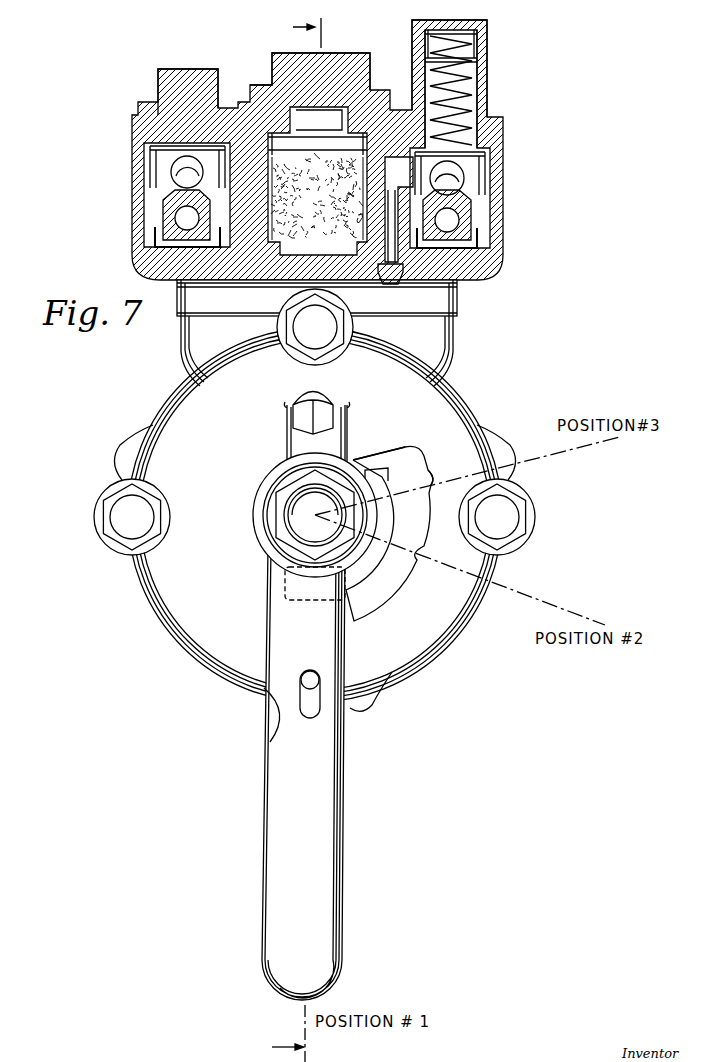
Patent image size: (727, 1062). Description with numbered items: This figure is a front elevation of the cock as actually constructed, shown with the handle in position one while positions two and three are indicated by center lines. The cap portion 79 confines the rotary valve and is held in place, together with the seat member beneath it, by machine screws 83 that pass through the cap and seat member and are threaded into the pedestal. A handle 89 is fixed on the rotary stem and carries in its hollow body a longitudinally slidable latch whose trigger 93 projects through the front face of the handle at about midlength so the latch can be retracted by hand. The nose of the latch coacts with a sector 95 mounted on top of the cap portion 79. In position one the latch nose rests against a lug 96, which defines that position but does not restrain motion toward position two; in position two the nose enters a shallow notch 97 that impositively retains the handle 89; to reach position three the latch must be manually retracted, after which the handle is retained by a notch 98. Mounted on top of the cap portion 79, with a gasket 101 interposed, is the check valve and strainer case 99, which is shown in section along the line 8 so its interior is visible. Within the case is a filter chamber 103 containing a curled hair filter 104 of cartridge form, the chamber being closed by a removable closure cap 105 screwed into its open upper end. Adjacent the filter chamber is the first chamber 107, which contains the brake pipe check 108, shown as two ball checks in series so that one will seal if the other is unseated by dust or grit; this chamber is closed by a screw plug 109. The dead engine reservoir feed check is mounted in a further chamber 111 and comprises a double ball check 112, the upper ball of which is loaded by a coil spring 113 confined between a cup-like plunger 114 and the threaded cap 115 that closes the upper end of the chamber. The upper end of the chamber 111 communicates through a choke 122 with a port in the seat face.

The section line 8- 8 is at (299, 32).
The cap portion 79 is at (186, 610).
The machine screws 83 is at (302, 329).
The handle 89 is at (283, 799).
The trigger 93 is at (307, 683).
The sector 95 is at (372, 456).
The lug 96 is at (283, 624).
The shallow notch 97 is at (420, 550).
The notch 98 is at (432, 477).
The check valve and strainer case 99 is at (501, 249).
The gasket 101 is at (462, 284).
The filter chamber 103 is at (317, 132).
The curled hair filter 104 is at (310, 174).
The closure cap 105 is at (366, 65).
The first chamber 107 is at (146, 153).
The brake pipe check 108 is at (147, 186).
The screw plug 109 is at (214, 70).
The chamber 111 is at (479, 166).
The double ball check 112 is at (492, 196).
The coil spring 113 is at (488, 38).
The cup-like plunger 114 is at (488, 96).
The threaded cap 115 is at (488, 62).
The choke 122 is at (384, 279).